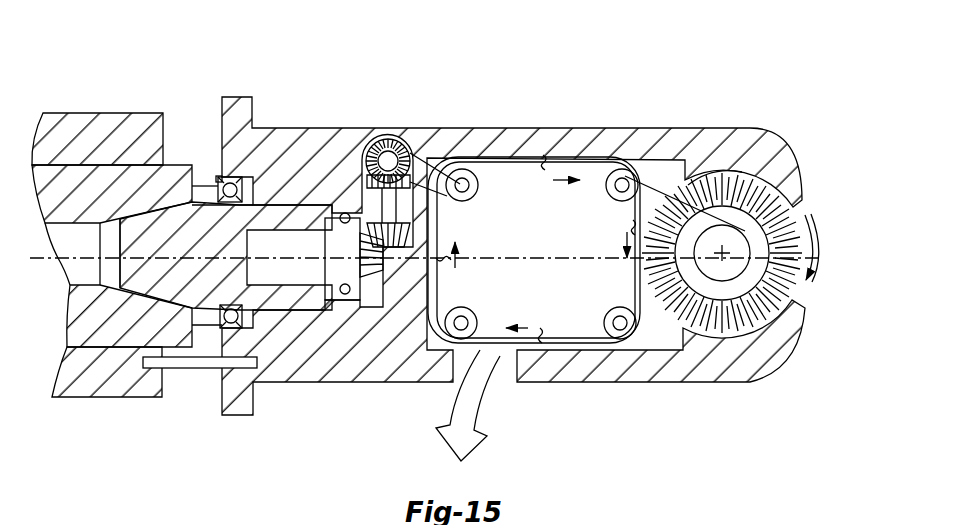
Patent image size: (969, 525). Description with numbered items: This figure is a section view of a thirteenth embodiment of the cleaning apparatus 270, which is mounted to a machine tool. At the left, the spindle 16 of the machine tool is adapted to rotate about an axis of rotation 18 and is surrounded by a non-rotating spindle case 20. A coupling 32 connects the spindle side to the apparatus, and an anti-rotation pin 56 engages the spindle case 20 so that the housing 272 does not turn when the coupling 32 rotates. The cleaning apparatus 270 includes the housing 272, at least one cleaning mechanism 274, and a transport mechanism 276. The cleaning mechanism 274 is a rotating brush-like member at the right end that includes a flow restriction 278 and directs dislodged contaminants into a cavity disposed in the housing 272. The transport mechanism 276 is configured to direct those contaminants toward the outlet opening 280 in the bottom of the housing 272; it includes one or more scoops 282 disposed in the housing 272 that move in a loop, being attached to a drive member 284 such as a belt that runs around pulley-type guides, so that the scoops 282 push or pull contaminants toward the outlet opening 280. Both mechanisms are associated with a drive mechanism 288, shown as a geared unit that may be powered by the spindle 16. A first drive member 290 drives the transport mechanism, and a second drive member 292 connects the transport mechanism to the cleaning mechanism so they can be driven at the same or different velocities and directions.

The spindle 16 is at (77, 163).
The axis of rotation 18 is at (35, 258).
The spindle case 20 is at (111, 397).
The coupling 32 is at (213, 180).
The anti-rotation pin 56 is at (185, 368).
The cleaning apparatus 270 is at (739, 104).
The housing 272 is at (302, 128).
The cleaning mechanism 274 is at (800, 213).
The flow restriction 278 is at (688, 181).
The transport mechanism 276 is at (603, 158).
The outlet opening 280 is at (493, 373).
The scoops 282 is at (546, 160).
The drive member 284 is at (542, 163).
The drive mechanism 288 is at (421, 114).
The first drive member 290 is at (441, 154).
The second drive member 292 is at (612, 219).